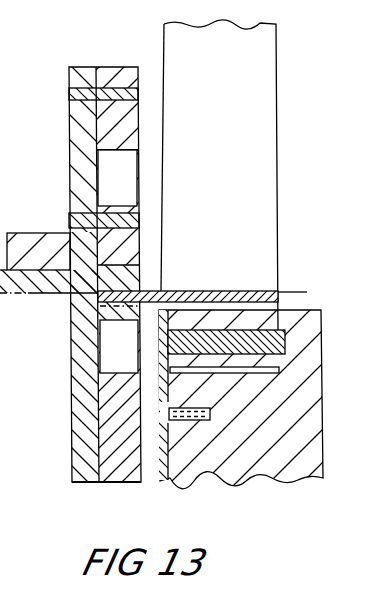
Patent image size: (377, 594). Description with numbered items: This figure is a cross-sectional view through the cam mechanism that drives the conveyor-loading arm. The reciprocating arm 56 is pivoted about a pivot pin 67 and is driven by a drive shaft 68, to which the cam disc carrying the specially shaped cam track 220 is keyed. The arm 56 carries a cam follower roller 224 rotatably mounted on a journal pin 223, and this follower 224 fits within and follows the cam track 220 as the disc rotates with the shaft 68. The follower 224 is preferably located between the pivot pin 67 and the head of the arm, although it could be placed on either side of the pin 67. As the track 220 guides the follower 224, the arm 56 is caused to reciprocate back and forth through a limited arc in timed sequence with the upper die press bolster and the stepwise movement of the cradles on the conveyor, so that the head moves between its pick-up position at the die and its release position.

The arm 56 is at (219, 175).
The pivot pin 67 is at (283, 330).
The drive shaft 68 is at (41, 282).
The cam track 220 is at (165, 178).
The journal pin 223 is at (203, 291).
The cam follower roller 224 is at (118, 326).